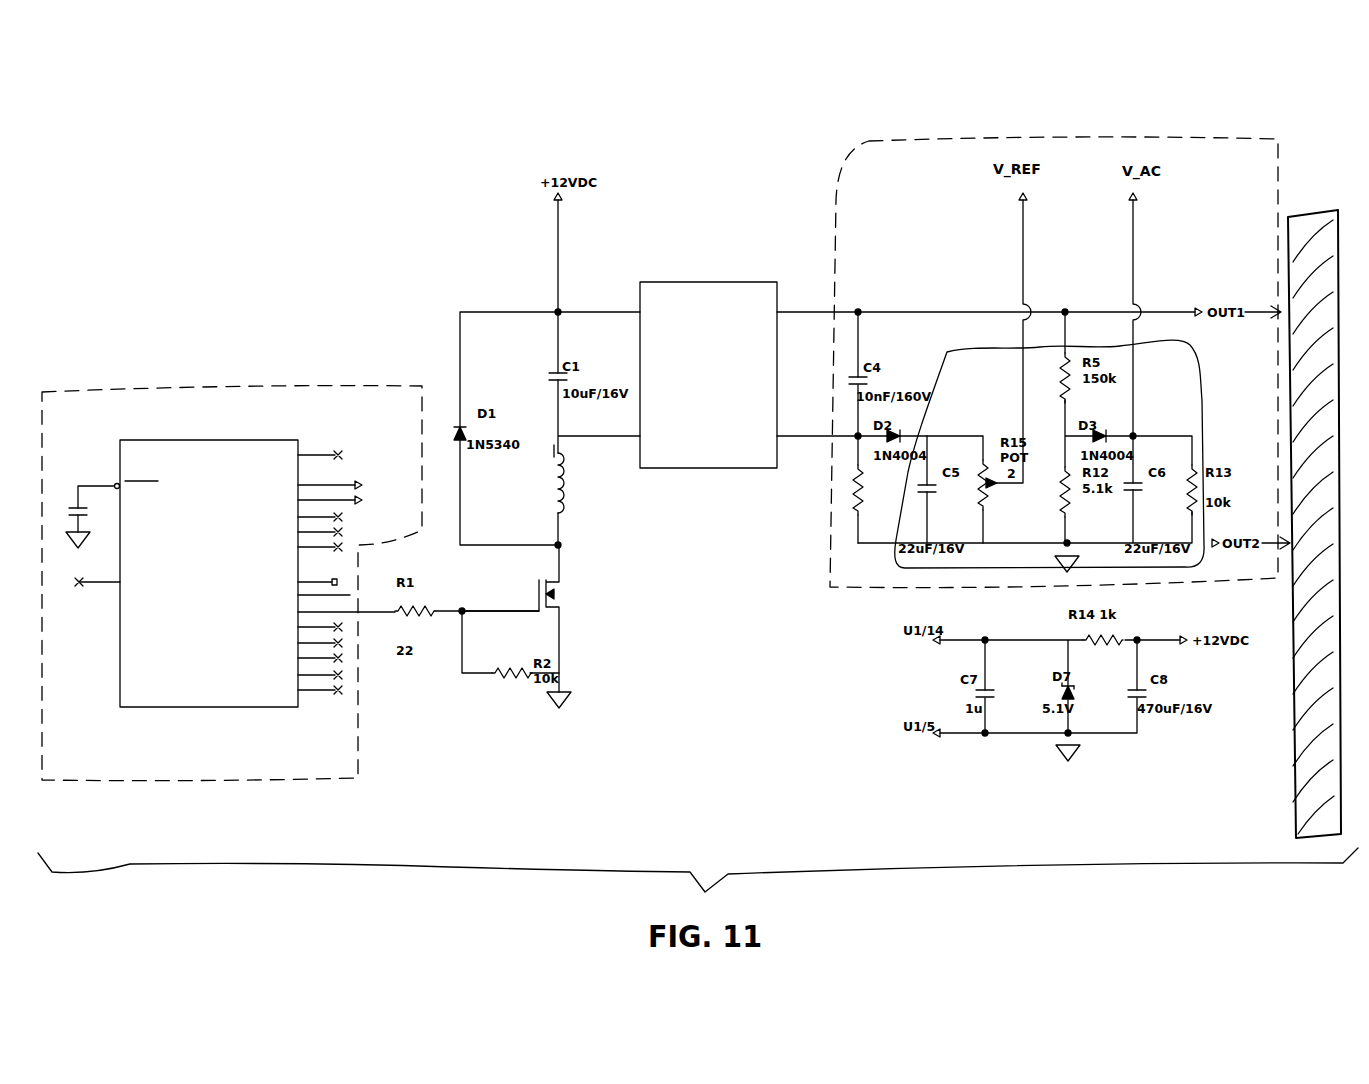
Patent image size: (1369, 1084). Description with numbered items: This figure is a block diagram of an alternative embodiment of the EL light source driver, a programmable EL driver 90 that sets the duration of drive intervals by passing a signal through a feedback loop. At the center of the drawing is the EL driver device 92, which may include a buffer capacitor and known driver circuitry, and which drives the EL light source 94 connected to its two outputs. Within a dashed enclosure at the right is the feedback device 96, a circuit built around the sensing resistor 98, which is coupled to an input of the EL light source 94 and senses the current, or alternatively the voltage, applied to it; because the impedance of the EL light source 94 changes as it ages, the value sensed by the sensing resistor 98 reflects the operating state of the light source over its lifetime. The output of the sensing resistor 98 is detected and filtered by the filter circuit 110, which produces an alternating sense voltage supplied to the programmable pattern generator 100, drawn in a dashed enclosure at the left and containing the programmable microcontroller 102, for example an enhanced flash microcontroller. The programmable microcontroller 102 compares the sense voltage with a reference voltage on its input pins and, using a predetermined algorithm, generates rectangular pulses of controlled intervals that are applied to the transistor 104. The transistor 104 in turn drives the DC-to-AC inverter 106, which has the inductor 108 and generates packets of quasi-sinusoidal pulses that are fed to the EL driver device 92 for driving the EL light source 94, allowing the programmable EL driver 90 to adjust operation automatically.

The programmable EL driver 90 is at (285, 189).
The EL driver device 92 is at (713, 282).
The EL light source 94 is at (1315, 210).
The feedback device 96 is at (869, 141).
The sensing resistor 98 is at (852, 510).
The programmable pattern generator 100 is at (185, 785).
The programmable microcontroller 102 is at (258, 707).
The transistor 104 is at (608, 588).
The DC-to-AC inverter 106 is at (605, 505).
The inductor 108 is at (554, 453).
The filter circuit 110 is at (1002, 343).